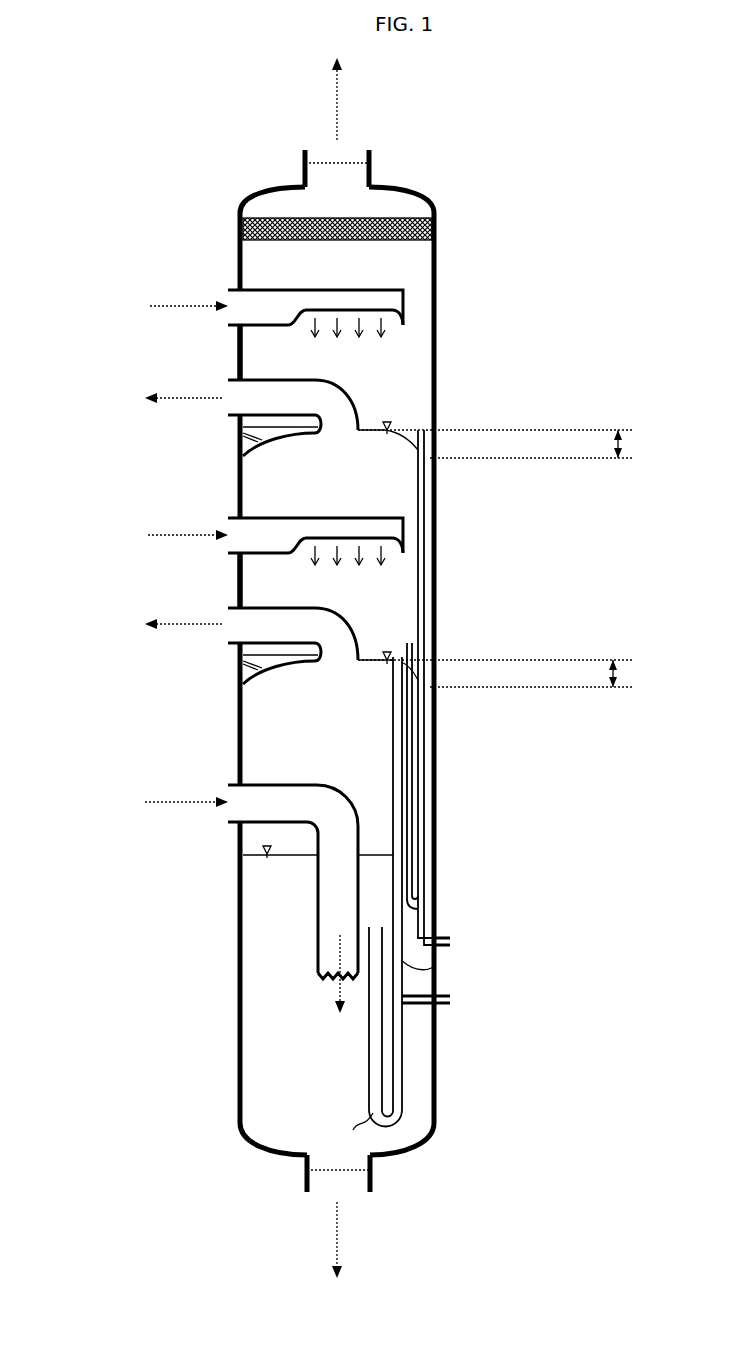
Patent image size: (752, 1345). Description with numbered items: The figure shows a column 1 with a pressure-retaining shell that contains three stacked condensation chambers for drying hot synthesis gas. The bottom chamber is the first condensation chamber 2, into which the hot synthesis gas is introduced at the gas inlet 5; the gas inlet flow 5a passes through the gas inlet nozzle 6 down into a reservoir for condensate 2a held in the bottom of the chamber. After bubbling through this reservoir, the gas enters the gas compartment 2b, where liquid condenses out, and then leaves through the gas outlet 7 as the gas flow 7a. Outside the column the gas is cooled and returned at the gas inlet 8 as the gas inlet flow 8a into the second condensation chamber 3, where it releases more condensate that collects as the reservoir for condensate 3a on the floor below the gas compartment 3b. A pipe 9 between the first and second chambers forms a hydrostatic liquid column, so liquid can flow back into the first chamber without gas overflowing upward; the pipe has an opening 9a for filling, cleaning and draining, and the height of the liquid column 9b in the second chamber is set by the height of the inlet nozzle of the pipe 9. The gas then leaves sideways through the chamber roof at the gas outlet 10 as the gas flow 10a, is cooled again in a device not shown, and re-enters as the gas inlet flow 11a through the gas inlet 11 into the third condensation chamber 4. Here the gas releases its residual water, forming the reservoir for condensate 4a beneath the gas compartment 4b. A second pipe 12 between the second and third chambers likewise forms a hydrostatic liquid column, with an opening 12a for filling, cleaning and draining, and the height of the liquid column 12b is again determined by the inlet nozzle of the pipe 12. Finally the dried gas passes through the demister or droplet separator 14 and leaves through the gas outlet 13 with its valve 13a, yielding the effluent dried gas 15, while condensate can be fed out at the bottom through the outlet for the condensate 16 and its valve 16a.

The column with pressure-retaining shell 1 is at (270, 183).
The first condensation chamber 2 is at (260, 1068).
The reservoir for condensate in the first condensation chamber 2a is at (318, 878).
The gas compartment in the first condensation chamber 2b is at (335, 721).
The second condensation chamber 3 is at (260, 583).
The reservoir for condensate in the second condensation chamber 3a is at (240, 660).
The gas compartment in the second condensation chamber 3b is at (335, 473).
The third condensation chamber 4 is at (263, 358).
The reservoir for condensate in the third condensation chamber 4a is at (240, 430).
The gas compartment in the third condensation chamber 4b is at (395, 385).
The gas inlet in the first condensation chamber 5 is at (135, 793).
The gas inlet flow in the first condensation chamber 5a is at (330, 1013).
The gas inlet nozzle for the raw gas 6 is at (310, 952).
The gas outlet from the first condensation chamber 7 is at (133, 620).
The gas flow from the first condensation chamber 7a is at (274, 648).
The gas inlet in the second condensation chamber 8 is at (140, 530).
The gas inlet flow in the second condensation chamber 8a is at (315, 567).
The hydrostatic liquid column between the first and second condensation chambers 9 is at (438, 955).
The opening for filling, cleaning and draining the hydrostatic liquid column 9a is at (450, 1000).
The height of the liquid column in the second condensation chamber 9b is at (506, 669).
The gas outlet from the second condensation chamber 10 is at (135, 393).
The gas flow from the second condensation chamber 10a is at (274, 421).
The gas inlet in the third condensation chamber 11 is at (140, 298).
The gas inlet flow in the third condensation chamber 11a is at (315, 338).
The hydrostatic liquid column between the second and third condensation chambers 12 is at (425, 792).
The opening for filling, cleaning and draining the hydrostatic liquid column 12a is at (452, 942).
The height of the liquid column in the third condensation chamber 12b is at (519, 440).
The gas outlet for the dried gas 13 is at (353, 175).
The valve 13a is at (293, 165).
The demister or droplet separator 14 is at (307, 247).
The effluent dried gas 15 is at (345, 90).
The outlet for the condensate 16 is at (323, 1227).
The valve 16a is at (297, 1168).